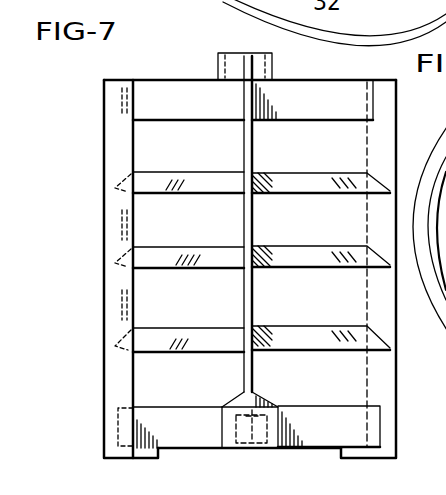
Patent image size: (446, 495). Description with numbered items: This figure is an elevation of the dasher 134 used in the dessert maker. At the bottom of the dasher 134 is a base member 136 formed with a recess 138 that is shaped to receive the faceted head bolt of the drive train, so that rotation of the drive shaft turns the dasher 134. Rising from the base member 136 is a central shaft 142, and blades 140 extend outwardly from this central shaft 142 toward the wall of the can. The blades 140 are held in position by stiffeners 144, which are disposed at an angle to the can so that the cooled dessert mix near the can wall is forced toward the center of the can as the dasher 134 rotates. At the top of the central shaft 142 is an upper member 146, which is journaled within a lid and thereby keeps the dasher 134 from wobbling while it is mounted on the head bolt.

The dasher 134 is at (172, 72).
The base member 136 is at (228, 436).
The recess 138 is at (258, 440).
The blades 140 is at (213, 184).
The central shaft 142 is at (253, 206).
The stiffeners 144 is at (126, 207).
The upper member 146 is at (263, 64).